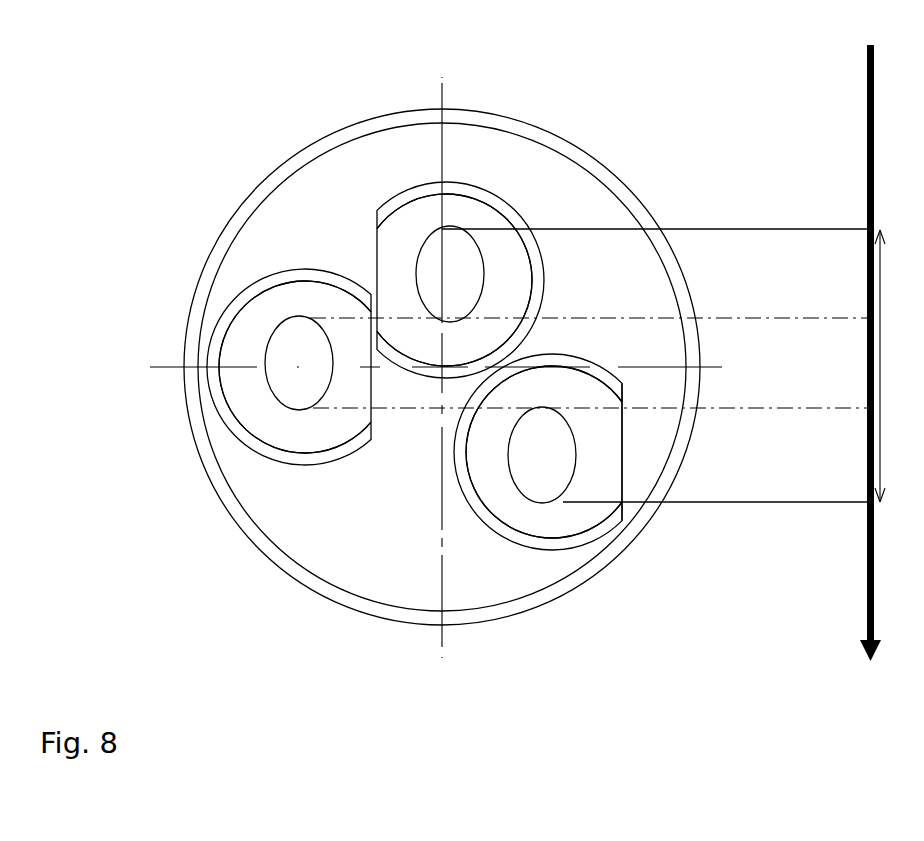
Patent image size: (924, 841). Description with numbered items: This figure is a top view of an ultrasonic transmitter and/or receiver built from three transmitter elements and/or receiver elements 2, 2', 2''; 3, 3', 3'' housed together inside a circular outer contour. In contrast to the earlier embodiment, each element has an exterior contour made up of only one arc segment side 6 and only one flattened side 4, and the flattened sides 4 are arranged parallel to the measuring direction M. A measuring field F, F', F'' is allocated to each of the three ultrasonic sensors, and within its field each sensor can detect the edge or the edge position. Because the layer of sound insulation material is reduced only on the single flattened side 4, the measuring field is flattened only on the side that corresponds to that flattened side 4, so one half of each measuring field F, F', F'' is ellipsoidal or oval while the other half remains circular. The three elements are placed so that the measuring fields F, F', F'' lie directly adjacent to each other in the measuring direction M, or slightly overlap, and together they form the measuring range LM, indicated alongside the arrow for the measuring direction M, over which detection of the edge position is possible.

The transmitter element 2 is at (544, 537).
The receiver element 3 is at (544, 452).
The flattened side 4 is at (618, 462).
The arc segment side 6 is at (583, 547).
The measuring field F is at (546, 558).
The second transmitter element 2' is at (555, 233).
The second receiver element 3' is at (454, 280).
The second measuring field F' is at (467, 172).
The third transmitter element 2'' is at (209, 322).
The third receiver element 3'' is at (295, 367).
The third measuring field F'' is at (190, 327).
The measuring direction M is at (867, 382).
The measuring range LM is at (898, 366).